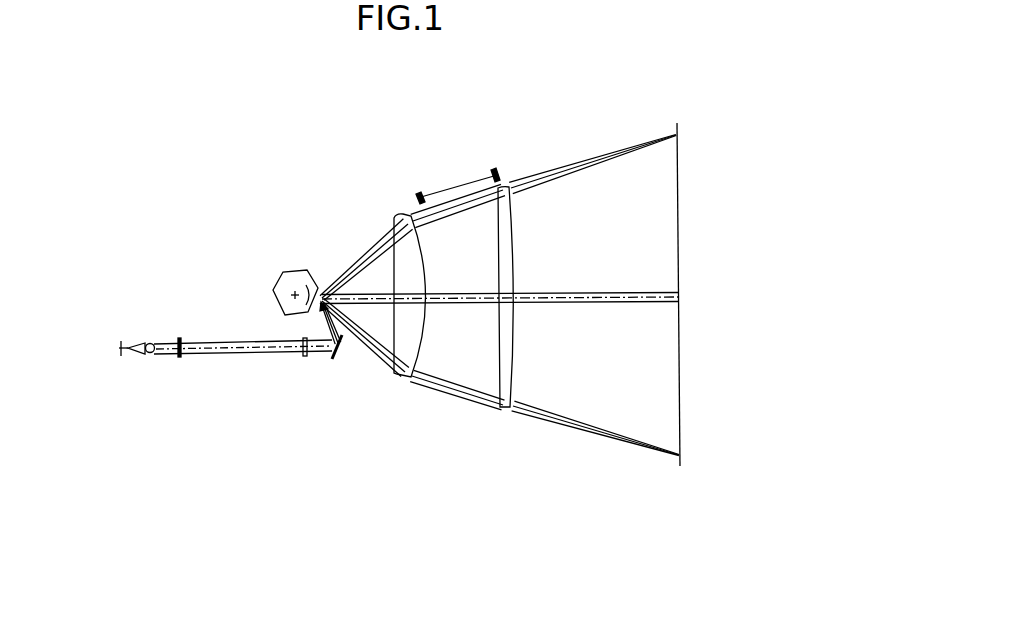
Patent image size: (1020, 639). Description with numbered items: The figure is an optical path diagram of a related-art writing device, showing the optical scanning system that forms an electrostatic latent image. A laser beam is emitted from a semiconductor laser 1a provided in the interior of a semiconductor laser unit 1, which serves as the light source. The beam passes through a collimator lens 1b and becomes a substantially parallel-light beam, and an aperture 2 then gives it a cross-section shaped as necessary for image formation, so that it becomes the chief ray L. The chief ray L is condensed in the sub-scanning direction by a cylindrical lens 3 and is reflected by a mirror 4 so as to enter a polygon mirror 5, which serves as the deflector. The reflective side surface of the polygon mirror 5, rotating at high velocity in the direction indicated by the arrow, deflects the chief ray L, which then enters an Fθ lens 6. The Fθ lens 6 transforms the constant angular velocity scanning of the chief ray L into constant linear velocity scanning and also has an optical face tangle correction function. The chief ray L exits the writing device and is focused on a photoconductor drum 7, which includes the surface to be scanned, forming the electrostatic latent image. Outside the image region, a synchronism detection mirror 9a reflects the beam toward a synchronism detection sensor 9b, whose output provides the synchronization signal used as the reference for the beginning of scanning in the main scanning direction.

The semiconductor laser unit 1 is at (140, 367).
The semiconductor laser 1a is at (122, 340).
The collimator lens 1b is at (150, 342).
The aperture 2 is at (181, 338).
The chief ray L is at (224, 334).
The cylindrical lens 3 is at (304, 357).
The mirror 4 is at (334, 361).
The polygon mirror 5 is at (284, 278).
The Fθ lens 6 is at (505, 408).
The photoconductor drum 7 is at (680, 230).
The synchronism detection mirror 9a is at (490, 172).
The synchronism detection sensor 9b is at (416, 197).